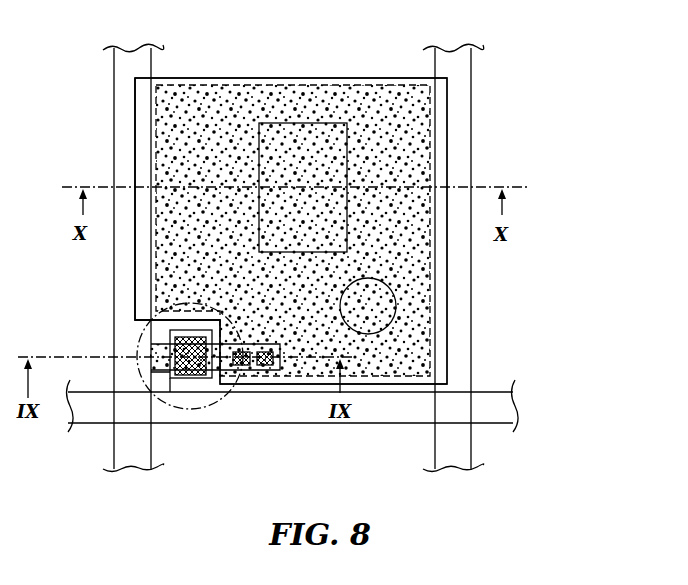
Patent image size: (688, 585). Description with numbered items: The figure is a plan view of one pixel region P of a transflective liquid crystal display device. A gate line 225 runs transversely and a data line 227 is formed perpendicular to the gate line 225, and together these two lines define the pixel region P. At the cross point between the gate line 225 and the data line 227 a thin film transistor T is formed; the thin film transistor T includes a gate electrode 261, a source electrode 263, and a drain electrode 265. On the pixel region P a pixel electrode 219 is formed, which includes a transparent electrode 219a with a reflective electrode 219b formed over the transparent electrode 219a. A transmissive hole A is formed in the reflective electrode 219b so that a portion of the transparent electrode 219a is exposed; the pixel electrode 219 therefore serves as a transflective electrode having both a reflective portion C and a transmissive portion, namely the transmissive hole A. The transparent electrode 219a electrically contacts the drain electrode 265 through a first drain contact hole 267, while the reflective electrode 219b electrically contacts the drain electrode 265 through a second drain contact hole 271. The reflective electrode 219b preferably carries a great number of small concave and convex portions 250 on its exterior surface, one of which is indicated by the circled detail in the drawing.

The pixel electrode 219 is at (567, 58).
The transparent electrode 219a is at (428, 163).
The reflective electrode 219b is at (448, 92).
The data line 227 is at (132, 287).
The gate line 225 is at (495, 424).
The gate electrode 261 is at (168, 343).
The source electrode 263 is at (172, 393).
The drain electrode 265 is at (288, 360).
The first drain contact hole 267 is at (240, 372).
The second drain contact hole 271 is at (268, 372).
The concave and convex portions 250 is at (398, 310).
The pixel region P is at (308, 78).
The reflective portion C is at (170, 140).
The transmissive hole A is at (338, 237).
The thin film transistor T is at (210, 407).